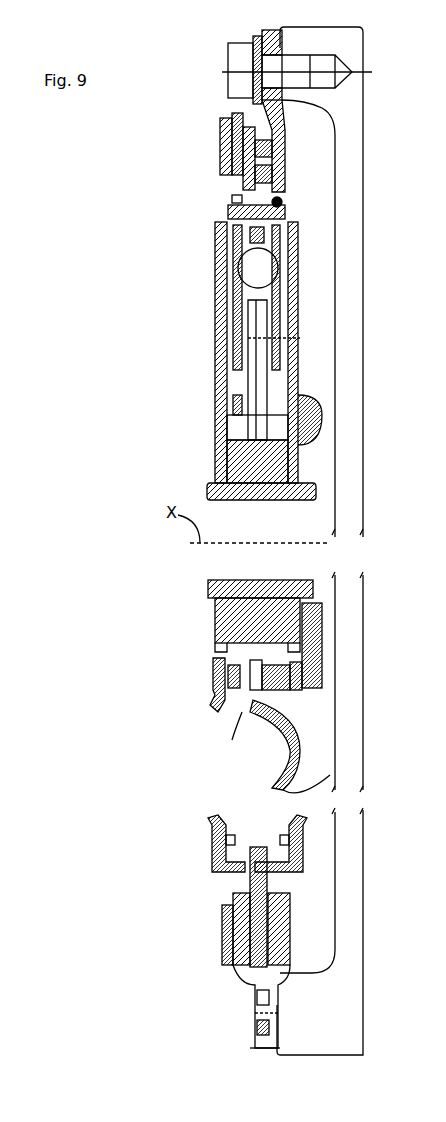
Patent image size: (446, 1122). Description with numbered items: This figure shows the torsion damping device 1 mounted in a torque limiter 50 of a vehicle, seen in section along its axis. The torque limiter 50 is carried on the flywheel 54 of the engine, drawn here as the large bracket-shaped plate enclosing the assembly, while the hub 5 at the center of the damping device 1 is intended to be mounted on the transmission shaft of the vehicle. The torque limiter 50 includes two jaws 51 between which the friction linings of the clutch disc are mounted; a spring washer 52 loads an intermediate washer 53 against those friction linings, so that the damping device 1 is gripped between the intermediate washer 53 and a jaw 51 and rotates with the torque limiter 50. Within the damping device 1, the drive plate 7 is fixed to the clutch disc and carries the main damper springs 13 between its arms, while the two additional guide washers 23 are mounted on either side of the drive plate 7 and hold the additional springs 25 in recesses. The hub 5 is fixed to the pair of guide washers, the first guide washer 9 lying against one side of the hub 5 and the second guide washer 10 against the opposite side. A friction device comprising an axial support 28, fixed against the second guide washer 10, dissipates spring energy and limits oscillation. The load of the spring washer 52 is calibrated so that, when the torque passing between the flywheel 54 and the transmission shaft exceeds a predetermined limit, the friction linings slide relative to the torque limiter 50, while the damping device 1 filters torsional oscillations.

The torsion damping device 1 is at (145, 235).
The hub 5 is at (210, 490).
The drive plate 7 is at (288, 337).
The first guide washer 9 is at (227, 405).
The second guide washer 10 is at (290, 252).
The springs 13 is at (300, 772).
The additional guide washers 23 is at (227, 365).
The additional springs 25 is at (215, 265).
The axial support 28 is at (310, 646).
The torque limiter 50 is at (222, 965).
The jaws 51 is at (232, 160).
The spring washer 52 is at (220, 135).
The intermediate washer 53 is at (243, 185).
The flywheel 54 is at (350, 475).